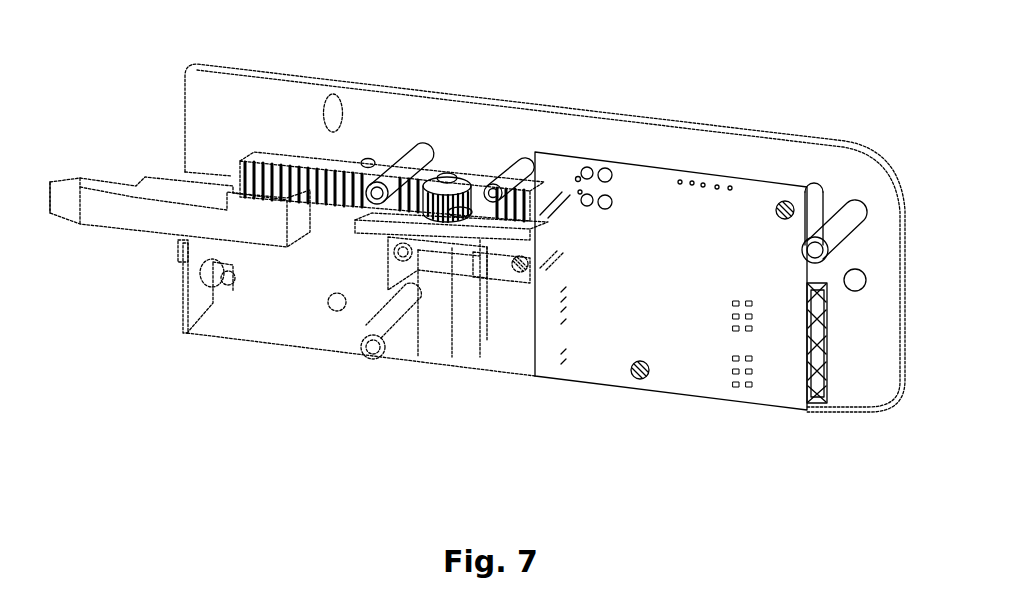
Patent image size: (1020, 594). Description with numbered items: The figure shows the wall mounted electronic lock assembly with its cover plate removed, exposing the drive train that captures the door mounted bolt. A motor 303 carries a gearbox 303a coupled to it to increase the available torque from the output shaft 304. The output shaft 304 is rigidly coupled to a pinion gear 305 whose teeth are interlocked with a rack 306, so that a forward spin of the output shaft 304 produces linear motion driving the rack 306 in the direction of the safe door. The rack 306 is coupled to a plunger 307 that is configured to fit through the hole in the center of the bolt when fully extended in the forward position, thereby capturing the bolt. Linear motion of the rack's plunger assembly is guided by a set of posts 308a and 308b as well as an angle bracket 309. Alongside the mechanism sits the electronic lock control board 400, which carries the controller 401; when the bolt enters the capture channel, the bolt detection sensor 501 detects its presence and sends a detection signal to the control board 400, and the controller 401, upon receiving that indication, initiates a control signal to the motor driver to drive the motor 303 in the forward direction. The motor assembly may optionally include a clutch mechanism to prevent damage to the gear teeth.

The motor 303 is at (463, 333).
The gearbox 303a is at (493, 263).
The output shaft 304 is at (447, 175).
The pinion gear 305 is at (460, 212).
The rack 306 is at (268, 160).
The plunger 307 is at (155, 220).
The post 308a is at (400, 163).
The post 308b is at (490, 165).
The angle bracket 309 is at (393, 217).
The electronic lock control board 400 is at (633, 192).
The controller 401 is at (673, 333).
The bolt detection sensor 501 is at (173, 267).